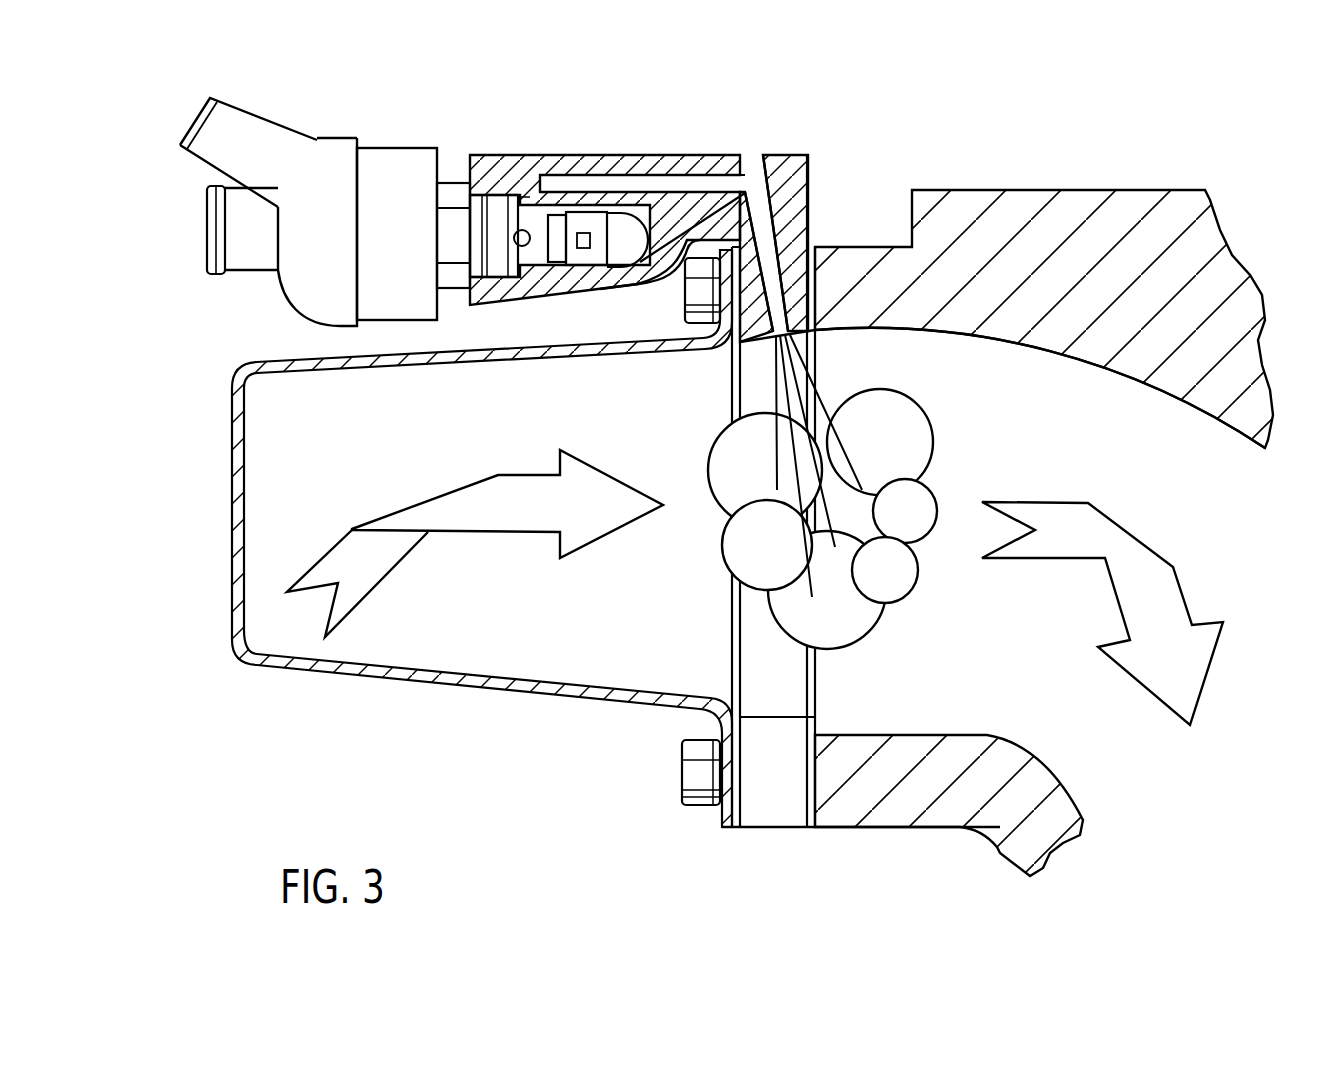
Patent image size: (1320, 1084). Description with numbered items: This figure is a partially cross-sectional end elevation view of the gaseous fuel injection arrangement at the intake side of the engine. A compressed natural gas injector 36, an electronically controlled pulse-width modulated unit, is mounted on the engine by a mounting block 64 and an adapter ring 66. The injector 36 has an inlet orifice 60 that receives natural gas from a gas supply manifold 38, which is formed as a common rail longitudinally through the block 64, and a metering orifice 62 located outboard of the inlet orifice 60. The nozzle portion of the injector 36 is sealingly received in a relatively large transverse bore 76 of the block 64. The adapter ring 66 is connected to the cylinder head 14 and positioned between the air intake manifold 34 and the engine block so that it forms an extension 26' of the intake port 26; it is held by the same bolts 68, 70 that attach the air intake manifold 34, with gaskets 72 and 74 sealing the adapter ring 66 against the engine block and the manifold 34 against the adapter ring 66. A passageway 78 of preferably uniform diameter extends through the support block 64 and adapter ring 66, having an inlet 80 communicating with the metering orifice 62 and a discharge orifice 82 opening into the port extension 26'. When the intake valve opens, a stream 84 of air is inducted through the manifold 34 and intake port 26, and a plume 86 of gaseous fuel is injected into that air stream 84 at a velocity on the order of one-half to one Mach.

The cylinder head 14 is at (1150, 185).
The intake port 26 is at (1002, 388).
The intake port extension 26' is at (809, 491).
The air intake manifold 34 is at (430, 680).
The CNG injector 36 is at (389, 143).
The gas supply manifold 38 is at (622, 287).
The inlet orifice 60 is at (585, 232).
The metering orifice 62 is at (522, 230).
The mounting block 64 is at (503, 147).
The adapter ring 66 is at (818, 175).
The bolt 68 is at (685, 795).
The bolt 70 is at (720, 332).
The gasket 72 is at (808, 828).
The gasket 74 is at (725, 822).
The transverse bore 76 is at (590, 268).
The passageway 78 is at (686, 190).
The inlet 80 is at (521, 197).
The discharge orifice 82 is at (790, 340).
The air stream 84 is at (462, 535).
The plume 86 is at (930, 423).